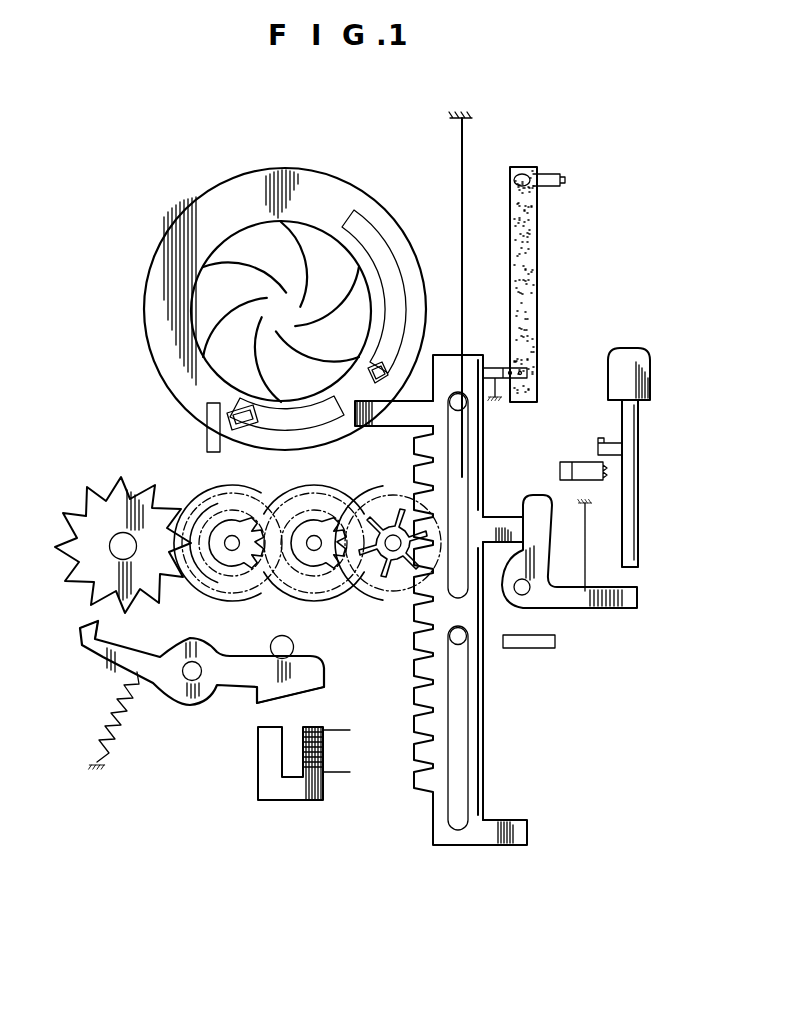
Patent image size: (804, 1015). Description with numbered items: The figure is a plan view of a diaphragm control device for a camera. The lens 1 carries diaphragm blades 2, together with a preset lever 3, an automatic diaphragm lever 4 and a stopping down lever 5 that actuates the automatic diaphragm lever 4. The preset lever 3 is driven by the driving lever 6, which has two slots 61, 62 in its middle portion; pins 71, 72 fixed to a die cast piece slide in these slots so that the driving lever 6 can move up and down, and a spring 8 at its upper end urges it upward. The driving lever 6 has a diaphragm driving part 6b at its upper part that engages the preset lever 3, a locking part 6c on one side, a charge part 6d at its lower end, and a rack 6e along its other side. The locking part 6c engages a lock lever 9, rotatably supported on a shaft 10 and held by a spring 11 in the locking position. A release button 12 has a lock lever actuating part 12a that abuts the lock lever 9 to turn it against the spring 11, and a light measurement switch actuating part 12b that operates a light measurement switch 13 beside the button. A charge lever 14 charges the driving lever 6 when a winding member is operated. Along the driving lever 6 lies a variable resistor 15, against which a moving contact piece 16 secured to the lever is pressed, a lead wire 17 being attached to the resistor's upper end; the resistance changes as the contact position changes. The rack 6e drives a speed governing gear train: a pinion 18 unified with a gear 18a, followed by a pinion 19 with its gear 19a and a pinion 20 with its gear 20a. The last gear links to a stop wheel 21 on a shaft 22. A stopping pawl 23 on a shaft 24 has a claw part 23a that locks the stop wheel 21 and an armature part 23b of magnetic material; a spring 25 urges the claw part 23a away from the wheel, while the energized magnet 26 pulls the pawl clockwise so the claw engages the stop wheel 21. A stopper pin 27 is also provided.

The lens 1 is at (232, 192).
The diaphragm blades 2 is at (205, 300).
The preset lever 3 is at (385, 372).
The automatic diaphragm lever 4 is at (246, 424).
The stopping down lever 5 is at (207, 425).
The driving lever 6 is at (466, 600).
The diaphragm driving part 6b is at (410, 420).
The locking part 6c is at (497, 517).
The charge part 6d is at (528, 838).
The rack 6e is at (415, 778).
The slot 61 is at (457, 470).
The slot 62 is at (460, 755).
The pin 71 is at (463, 403).
The pin 72 is at (464, 640).
The spring 8 is at (458, 200).
The lock lever 9 is at (541, 498).
The shaft 10 is at (530, 590).
The spring 11 is at (592, 532).
The release button 12 is at (648, 360).
The lock lever actuating part 12a is at (638, 560).
The light measurement switch actuating part 12b is at (615, 450).
The light measurement switch 13 is at (608, 470).
The charge lever 14 is at (552, 648).
The variable resistor 15 is at (537, 283).
The moving contact piece 16 is at (520, 380).
The lead wire 17 is at (545, 178).
The pinion 18 is at (372, 482).
The gear 18a is at (393, 590).
The pinion 19 is at (318, 562).
The gear 19a is at (292, 587).
The pinion 20 is at (220, 530).
The gear 20a is at (215, 478).
The stop wheel 21 is at (70, 565).
The shaft 22 is at (118, 532).
The stopping pawl 23 is at (160, 692).
The claw part 23a is at (78, 640).
The armature part 23b is at (258, 692).
The shaft 24 is at (192, 661).
The spring 25 is at (115, 705).
The magnet 26 is at (260, 770).
The stopper pin 27 is at (294, 648).